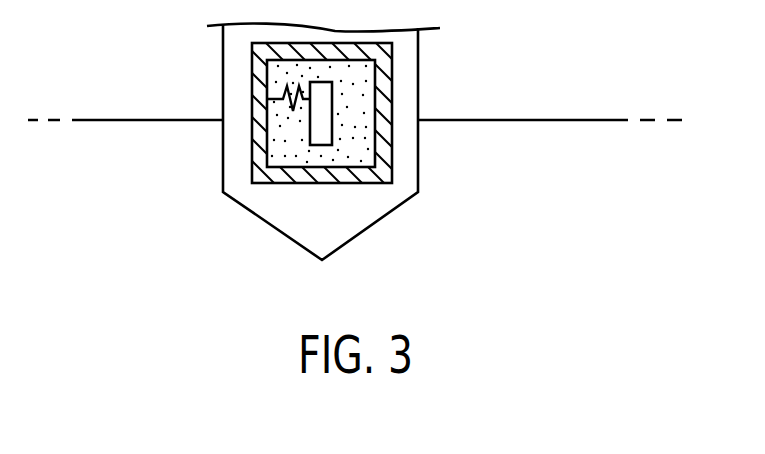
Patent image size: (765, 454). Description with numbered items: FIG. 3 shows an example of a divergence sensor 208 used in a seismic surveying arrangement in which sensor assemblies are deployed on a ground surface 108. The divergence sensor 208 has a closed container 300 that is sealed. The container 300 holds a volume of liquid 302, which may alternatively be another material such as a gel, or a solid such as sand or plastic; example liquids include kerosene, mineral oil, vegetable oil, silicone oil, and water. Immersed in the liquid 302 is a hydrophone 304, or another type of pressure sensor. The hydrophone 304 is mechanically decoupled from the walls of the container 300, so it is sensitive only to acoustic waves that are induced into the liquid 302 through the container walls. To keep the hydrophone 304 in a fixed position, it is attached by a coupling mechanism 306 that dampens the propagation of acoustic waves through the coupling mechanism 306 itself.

The ground surface 108 is at (523, 120).
The divergence sensor 208 is at (396, 145).
The closed container 300 is at (392, 73).
The liquid 302 is at (340, 160).
The hydrophone 304 is at (320, 145).
The coupling mechanism 306 is at (268, 96).